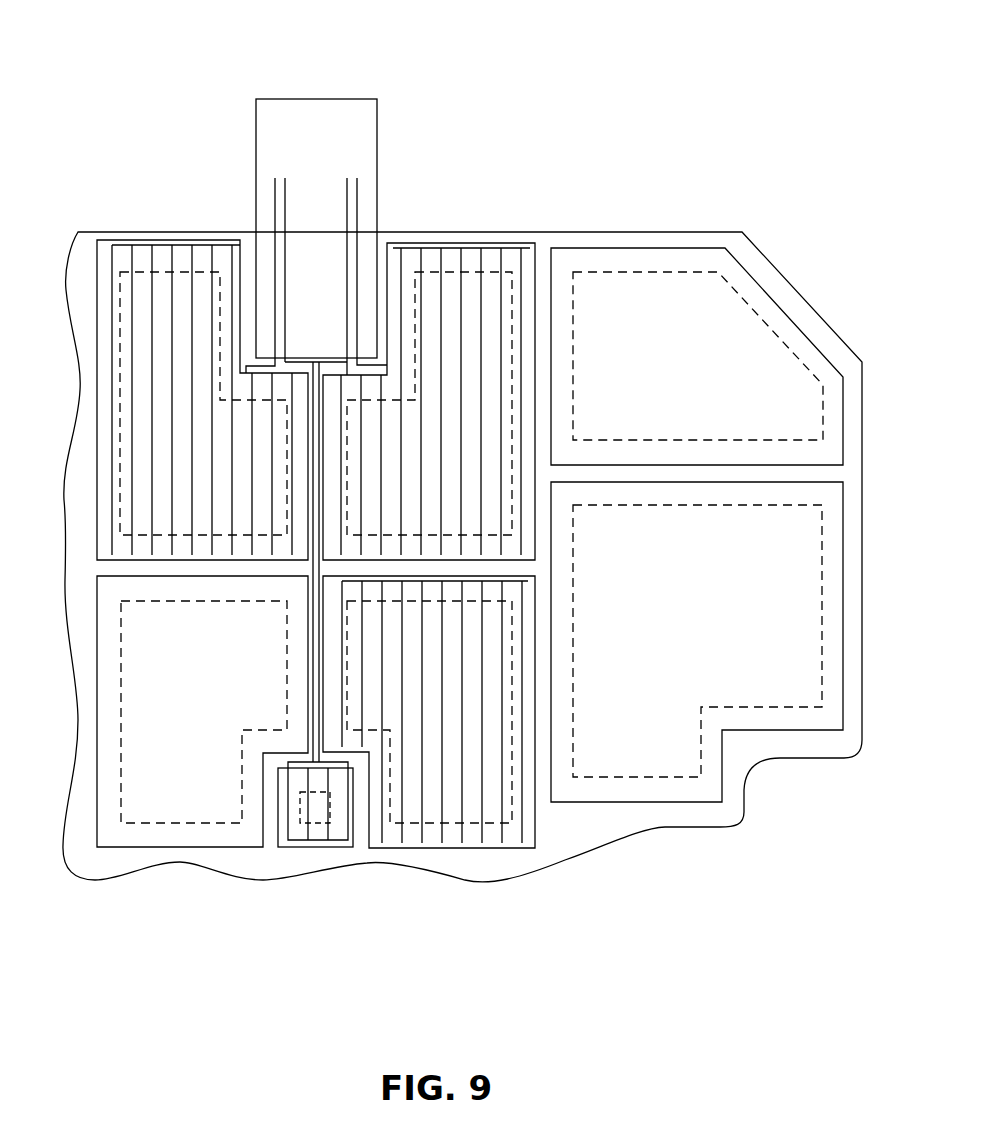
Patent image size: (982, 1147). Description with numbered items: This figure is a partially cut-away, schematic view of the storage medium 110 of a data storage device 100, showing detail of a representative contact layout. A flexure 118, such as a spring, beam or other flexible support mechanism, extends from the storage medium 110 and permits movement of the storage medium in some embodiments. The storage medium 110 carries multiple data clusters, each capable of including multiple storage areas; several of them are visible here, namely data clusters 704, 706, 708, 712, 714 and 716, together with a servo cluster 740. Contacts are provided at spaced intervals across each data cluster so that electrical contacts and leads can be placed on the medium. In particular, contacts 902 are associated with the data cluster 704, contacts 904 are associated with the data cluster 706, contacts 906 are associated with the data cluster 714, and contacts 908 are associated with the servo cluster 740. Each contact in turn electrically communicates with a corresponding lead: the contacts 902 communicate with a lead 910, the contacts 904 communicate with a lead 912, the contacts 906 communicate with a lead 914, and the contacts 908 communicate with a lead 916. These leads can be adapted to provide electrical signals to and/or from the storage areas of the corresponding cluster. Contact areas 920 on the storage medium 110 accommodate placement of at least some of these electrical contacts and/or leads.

The data storage device 100 is at (786, 88).
The storage medium 110 is at (766, 192).
The flexure 118 is at (318, 99).
The data cluster 704 is at (203, 272).
The data cluster 706 is at (452, 270).
The data cluster 708 is at (695, 367).
The data cluster 712 is at (215, 717).
The data cluster 714 is at (428, 846).
The data cluster 716 is at (710, 617).
The servo cluster 740 is at (314, 826).
The contacts 902 is at (110, 280).
The contacts 904 is at (522, 297).
The contacts 906 is at (515, 800).
The contacts 908 is at (308, 840).
The lead 910 is at (275, 213).
The lead 912 is at (358, 197).
The lead 914 is at (346, 215).
The lead 916 is at (284, 213).
The contact areas 920 is at (403, 236).